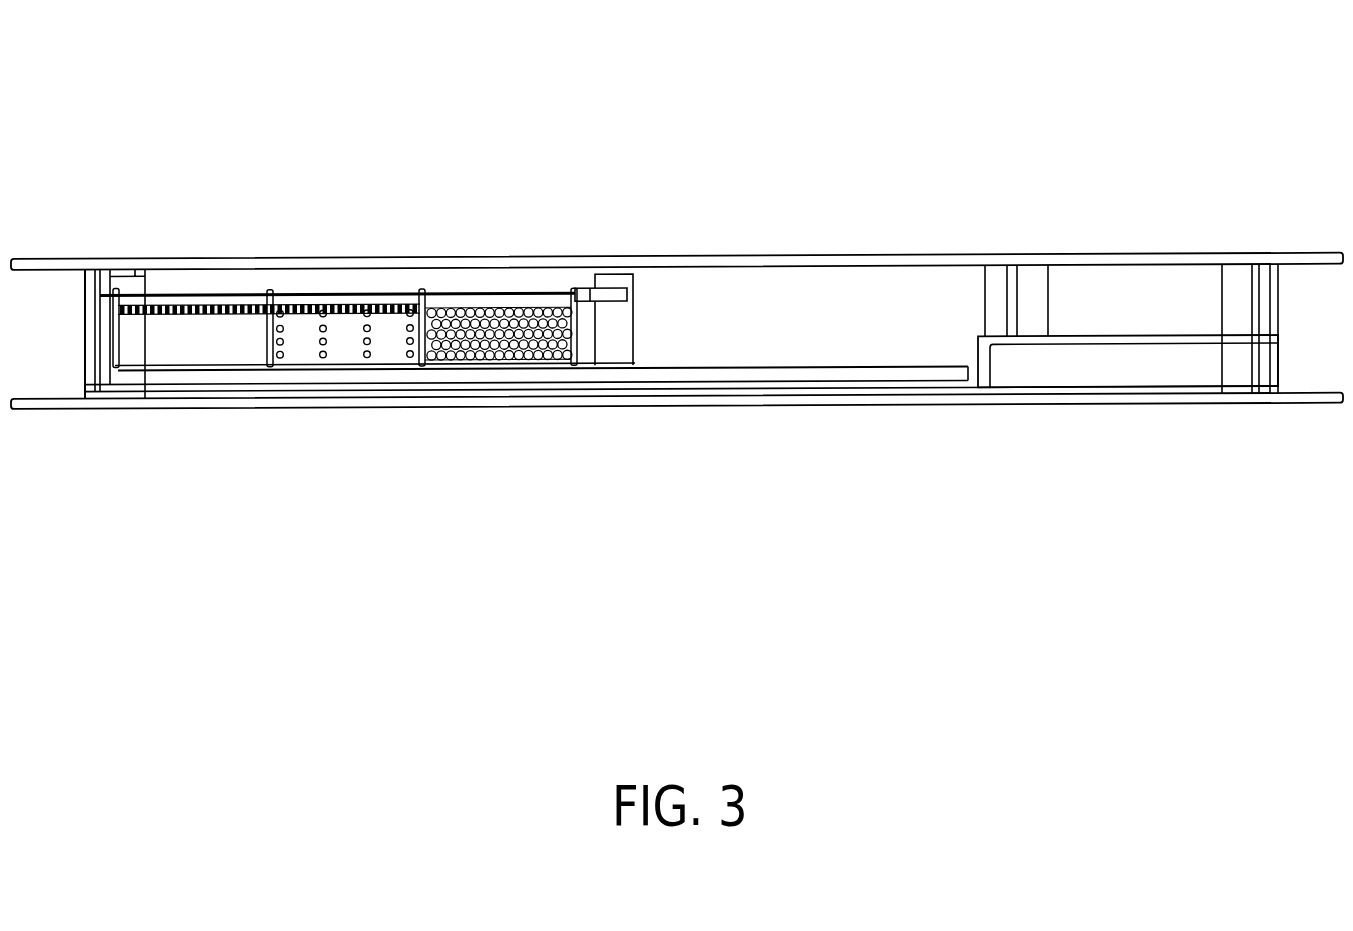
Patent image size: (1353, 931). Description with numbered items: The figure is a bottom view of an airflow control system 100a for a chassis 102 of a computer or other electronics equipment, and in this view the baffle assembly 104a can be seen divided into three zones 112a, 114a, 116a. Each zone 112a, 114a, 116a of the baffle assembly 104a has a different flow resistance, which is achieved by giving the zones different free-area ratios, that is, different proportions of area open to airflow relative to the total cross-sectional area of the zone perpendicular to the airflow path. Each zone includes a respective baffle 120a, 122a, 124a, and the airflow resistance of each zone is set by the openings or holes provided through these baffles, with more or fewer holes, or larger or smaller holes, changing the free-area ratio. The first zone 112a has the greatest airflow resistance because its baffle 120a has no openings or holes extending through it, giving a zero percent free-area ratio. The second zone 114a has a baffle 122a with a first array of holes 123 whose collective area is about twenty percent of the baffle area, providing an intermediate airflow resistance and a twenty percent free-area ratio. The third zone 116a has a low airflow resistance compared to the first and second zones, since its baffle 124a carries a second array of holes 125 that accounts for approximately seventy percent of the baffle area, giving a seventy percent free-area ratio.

The airflow control system 100a is at (677, 218).
The chassis 102 is at (677, 261).
The baffle assembly 104a is at (681, 331).
The first zone 112a is at (677, 401).
The second zone 114a is at (681, 385).
The third zone 116a is at (541, 372).
The baffle 120a is at (266, 327).
The baffle 122a is at (346, 328).
The first array of holes 123 is at (345, 334).
The baffle 124a is at (501, 327).
The second array of holes 125 is at (499, 334).